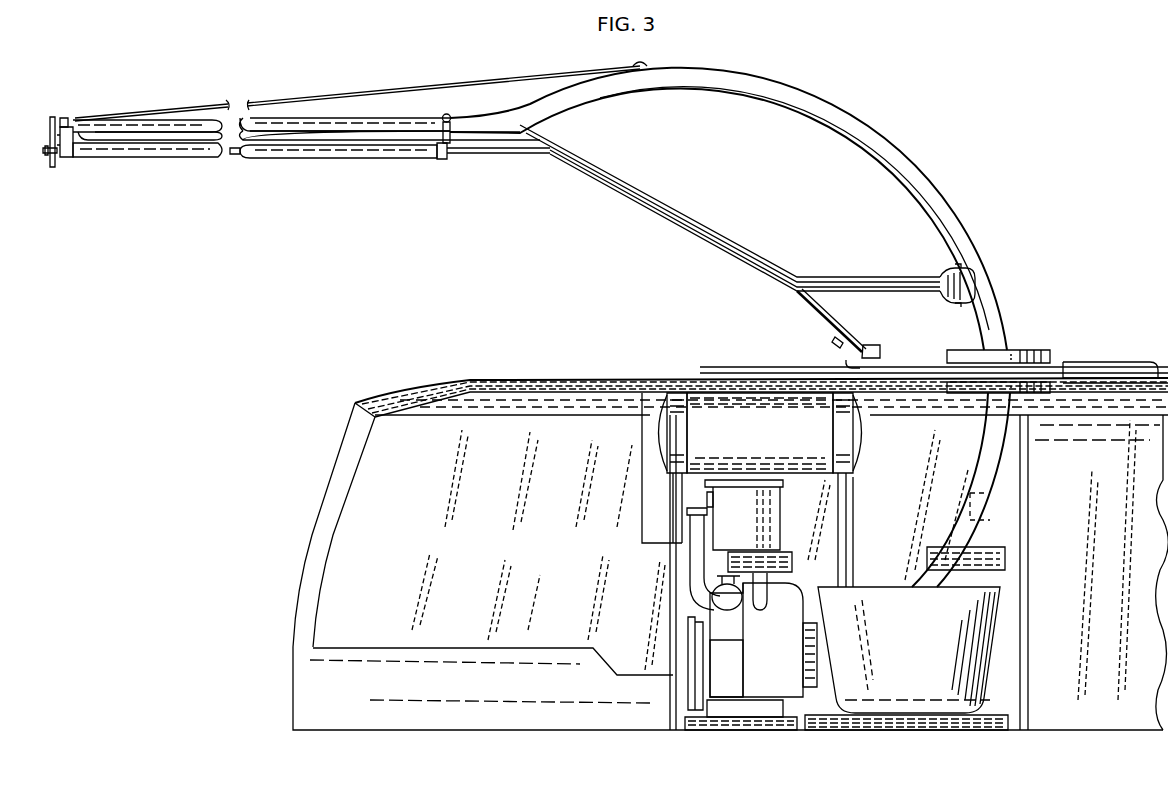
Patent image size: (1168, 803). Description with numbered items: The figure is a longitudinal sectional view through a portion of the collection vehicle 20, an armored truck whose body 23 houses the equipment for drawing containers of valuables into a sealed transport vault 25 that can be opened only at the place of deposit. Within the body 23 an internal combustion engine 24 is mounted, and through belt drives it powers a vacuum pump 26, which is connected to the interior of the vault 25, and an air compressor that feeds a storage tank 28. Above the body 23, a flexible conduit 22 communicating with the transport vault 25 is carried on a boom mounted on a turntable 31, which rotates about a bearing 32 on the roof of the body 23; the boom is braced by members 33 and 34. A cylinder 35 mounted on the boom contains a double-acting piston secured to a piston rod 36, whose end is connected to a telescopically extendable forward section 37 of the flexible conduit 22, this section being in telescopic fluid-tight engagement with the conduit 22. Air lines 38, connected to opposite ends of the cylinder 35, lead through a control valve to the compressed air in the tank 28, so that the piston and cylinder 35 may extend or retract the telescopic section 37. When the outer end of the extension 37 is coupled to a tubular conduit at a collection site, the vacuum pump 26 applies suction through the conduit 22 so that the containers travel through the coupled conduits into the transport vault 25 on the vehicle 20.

The vehicle 20 is at (572, 374).
The flexible conduit 22 is at (827, 107).
The body 23 is at (453, 380).
The internal combustion engine 24 is at (728, 657).
The transport vault 25 is at (925, 664).
The vacuum pump 26 is at (785, 595).
The storage tank 28 is at (765, 410).
The turntable 31 is at (1018, 353).
The bearing 32 is at (1073, 378).
The bracing member 33 is at (837, 322).
The bracing member 34 is at (960, 283).
The cylinder 35 is at (310, 150).
The piston rod 36 is at (233, 156).
The telescopically extendable forward section 37 is at (78, 126).
The air lines 38 is at (668, 218).